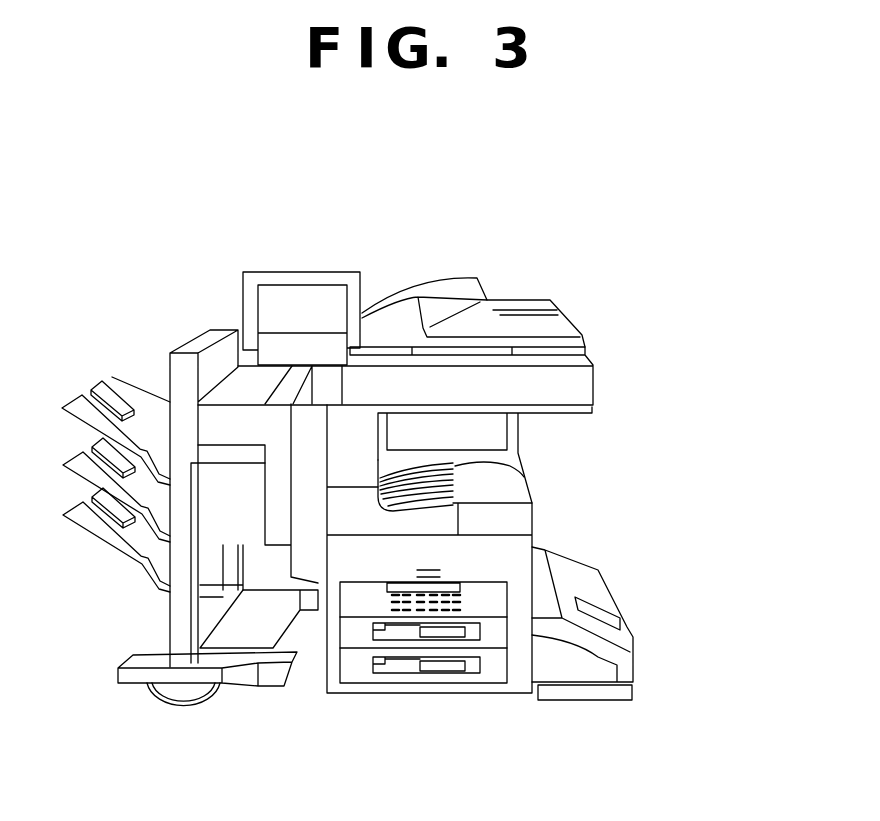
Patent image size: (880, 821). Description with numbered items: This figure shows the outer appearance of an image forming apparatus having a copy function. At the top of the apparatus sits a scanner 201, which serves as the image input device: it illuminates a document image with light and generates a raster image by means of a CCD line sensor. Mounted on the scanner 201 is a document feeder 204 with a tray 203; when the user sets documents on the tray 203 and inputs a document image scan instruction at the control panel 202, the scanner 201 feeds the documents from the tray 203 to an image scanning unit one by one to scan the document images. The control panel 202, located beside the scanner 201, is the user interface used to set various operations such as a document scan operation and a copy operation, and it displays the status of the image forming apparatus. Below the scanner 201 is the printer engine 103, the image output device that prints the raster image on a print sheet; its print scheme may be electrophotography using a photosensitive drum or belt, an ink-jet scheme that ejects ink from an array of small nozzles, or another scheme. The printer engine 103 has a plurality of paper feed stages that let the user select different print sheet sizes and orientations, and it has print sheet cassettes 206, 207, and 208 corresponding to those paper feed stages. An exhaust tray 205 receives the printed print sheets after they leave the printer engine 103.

The scanner 201 is at (595, 357).
The control panel 202 is at (298, 272).
The tray 203 is at (435, 283).
The document feeder 204 is at (523, 303).
The exhaust tray 205 is at (524, 477).
The printer engine 103 is at (532, 530).
The print sheet cassette 206 is at (398, 632).
The print sheet cassette 207 is at (492, 673).
The print sheet cassette 208 is at (588, 677).